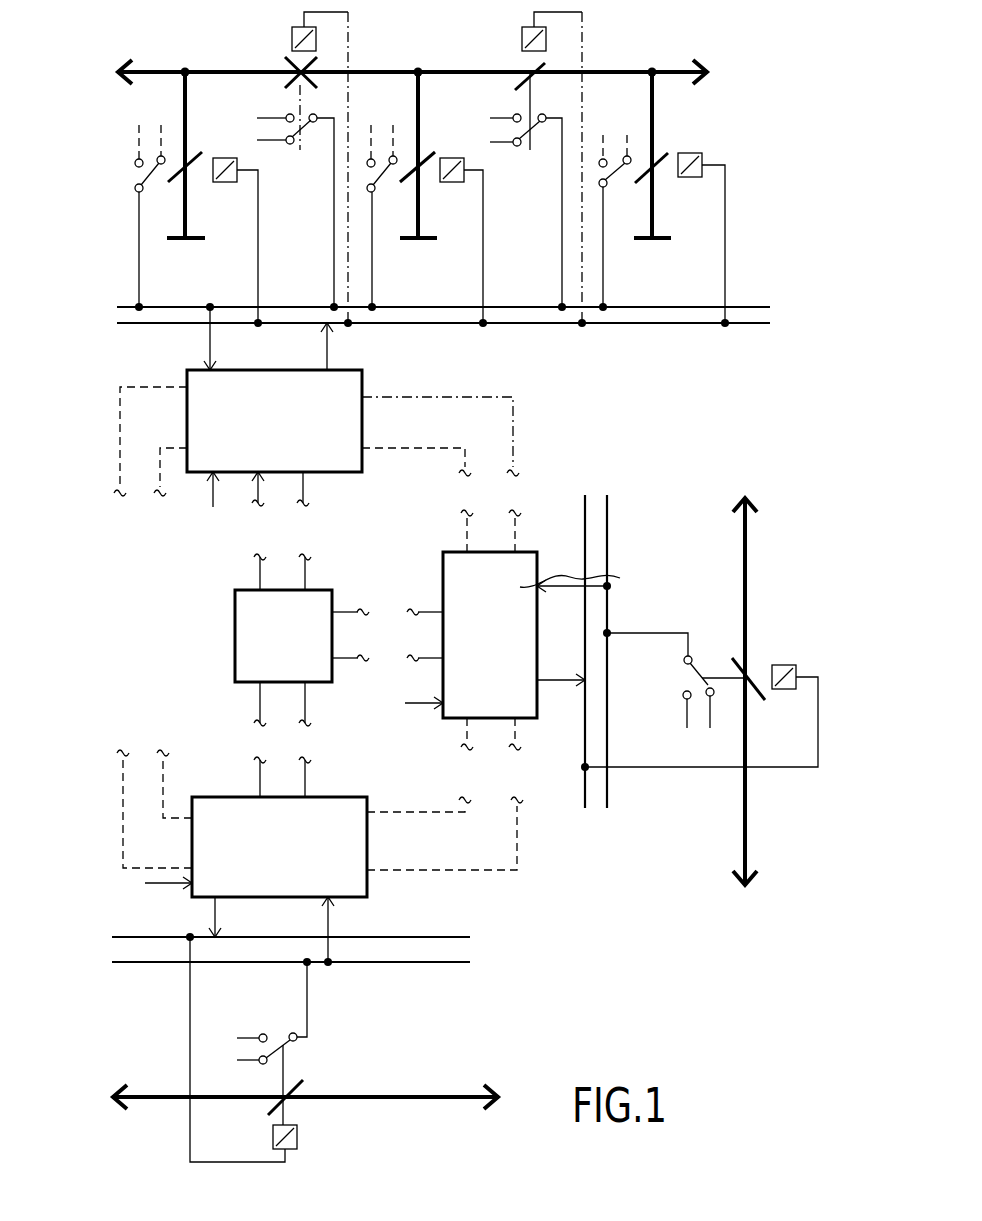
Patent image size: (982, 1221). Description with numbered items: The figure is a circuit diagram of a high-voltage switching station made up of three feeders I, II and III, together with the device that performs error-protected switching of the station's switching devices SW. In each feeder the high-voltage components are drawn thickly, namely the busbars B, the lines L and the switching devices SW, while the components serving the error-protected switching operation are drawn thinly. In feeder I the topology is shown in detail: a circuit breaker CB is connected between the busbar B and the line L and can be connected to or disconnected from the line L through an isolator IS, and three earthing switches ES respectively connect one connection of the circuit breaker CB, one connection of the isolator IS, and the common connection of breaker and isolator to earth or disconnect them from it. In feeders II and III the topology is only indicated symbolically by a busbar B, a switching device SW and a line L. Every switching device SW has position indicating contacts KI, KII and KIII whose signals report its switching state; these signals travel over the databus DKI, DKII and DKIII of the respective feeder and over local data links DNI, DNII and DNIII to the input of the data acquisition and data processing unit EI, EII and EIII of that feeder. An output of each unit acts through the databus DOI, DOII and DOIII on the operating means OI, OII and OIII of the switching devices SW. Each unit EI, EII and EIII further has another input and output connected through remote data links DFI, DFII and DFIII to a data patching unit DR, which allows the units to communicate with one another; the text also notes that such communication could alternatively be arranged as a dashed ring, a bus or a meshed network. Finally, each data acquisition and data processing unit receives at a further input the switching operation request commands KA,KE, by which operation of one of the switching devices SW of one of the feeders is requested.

The busbar B is at (422, 585).
The line L is at (630, 585).
The earthing switch ES is at (196, 150).
The circuit breaker CB is at (293, 61).
The isolator IS is at (527, 70).
The switching device SW is at (512, 70).
The position indicating contacts of feeder I KI is at (527, 160).
The operating means of feeder I OI is at (293, 29).
The databus of feeder I DKI is at (747, 307).
The databus of feeder I DOI is at (745, 323).
The local data link of feeder I DNI is at (325, 355).
The data acquisition and data processing unit of feeder I EI is at (345, 396).
The switching operation request commands KA,KE is at (213, 494).
The remote data link of feeder I DFI is at (303, 497).
The data patching unit DR is at (250, 638).
The remote data link of feeder II DFII is at (416, 655).
The data acquisition and data processing unit of feeder II EII is at (518, 566).
The local data link of feeder II DNII is at (563, 593).
The databus of feeder II DOII is at (585, 790).
The databus of feeder II DKII is at (608, 790).
The position indicating contacts of feeder II KII is at (683, 697).
The operating means of feeder II OII is at (784, 692).
The remote data link of feeder III DFIII is at (303, 765).
The data acquisition and data processing unit of feeder III EIII is at (338, 810).
The local data link of feeder III DNIII is at (328, 923).
The databus of feeder III DOIII is at (440, 937).
The databus of feeder III DKIII is at (447, 962).
The position indicating contacts of feeder III KIII is at (261, 1035).
The operating means of feeder III OIII is at (298, 1142).
The feeder I is at (775, 125).
The feeder II is at (816, 851).
The feeder III is at (760, 1070).